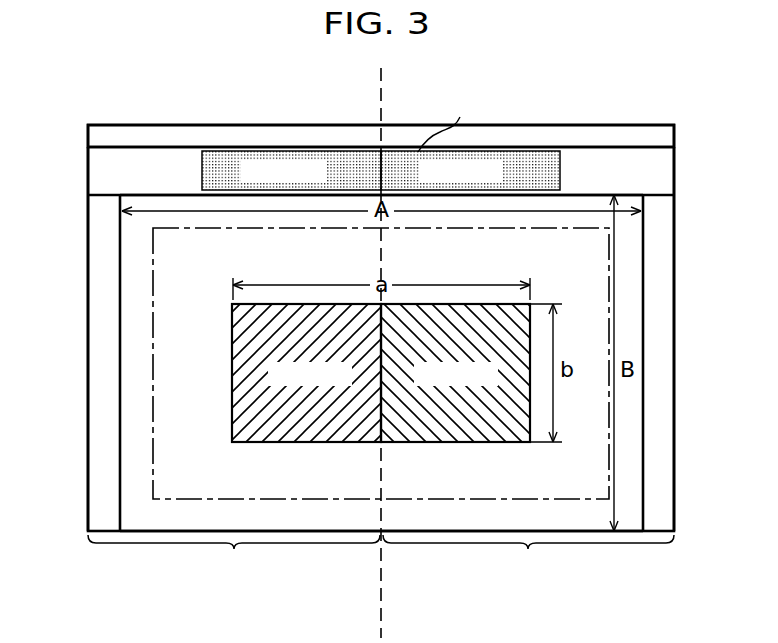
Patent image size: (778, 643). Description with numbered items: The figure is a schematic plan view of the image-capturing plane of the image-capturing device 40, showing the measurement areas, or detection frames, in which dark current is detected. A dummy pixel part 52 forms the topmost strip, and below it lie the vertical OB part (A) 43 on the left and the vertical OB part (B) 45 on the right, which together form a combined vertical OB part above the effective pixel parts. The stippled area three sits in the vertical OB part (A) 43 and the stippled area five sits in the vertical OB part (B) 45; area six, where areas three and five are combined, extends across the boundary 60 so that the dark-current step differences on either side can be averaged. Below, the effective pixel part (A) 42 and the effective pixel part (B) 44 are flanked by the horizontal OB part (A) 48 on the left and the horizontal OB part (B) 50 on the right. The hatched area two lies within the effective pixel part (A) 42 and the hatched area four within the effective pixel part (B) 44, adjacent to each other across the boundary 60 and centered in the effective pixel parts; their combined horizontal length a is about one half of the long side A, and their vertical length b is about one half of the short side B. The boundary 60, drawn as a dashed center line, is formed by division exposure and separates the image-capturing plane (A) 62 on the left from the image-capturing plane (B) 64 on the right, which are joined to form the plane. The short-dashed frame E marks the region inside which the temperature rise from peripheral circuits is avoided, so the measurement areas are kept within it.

The image-capturing device 40 is at (203, 105).
The effective pixel part (A) 42 is at (128, 424).
The vertical OB part (A) 43 is at (90, 170).
The effective pixel part (B) 44 is at (628, 456).
The vertical OB part (B) 45 is at (660, 175).
The horizontal OB part (A) 48 is at (92, 333).
The horizontal OB part (B) 50 is at (662, 334).
The dummy pixel part 52 is at (665, 133).
The boundary 60 is at (385, 620).
The image-capturing plane (A) 62 is at (234, 557).
The image-capturing plane (B) 64 is at (528, 557).
The frame E is at (152, 486).